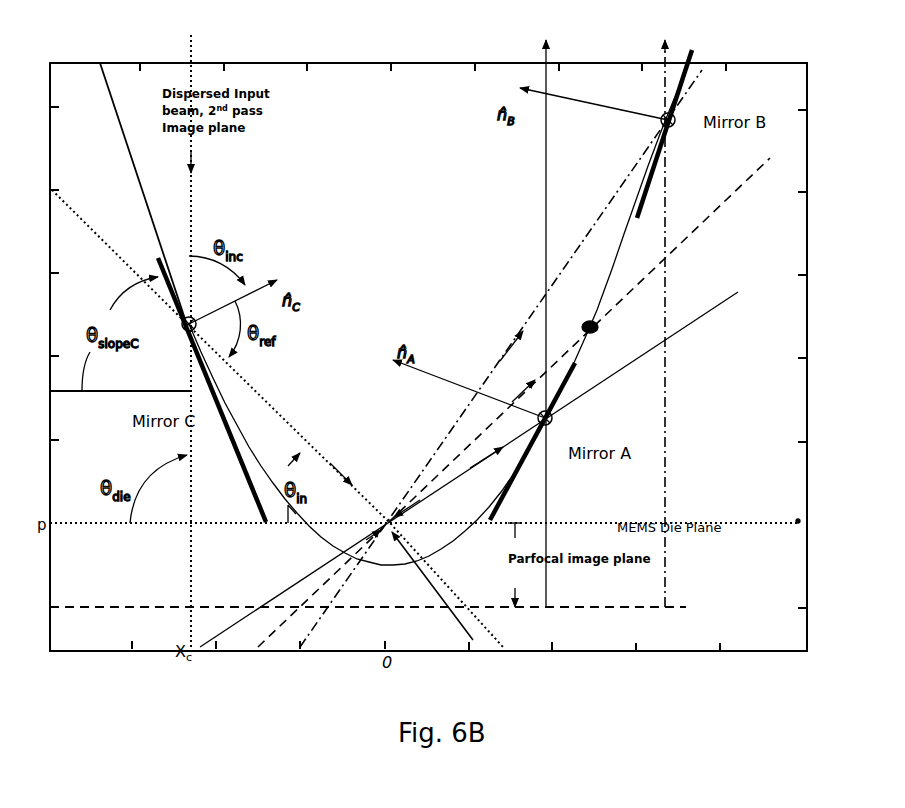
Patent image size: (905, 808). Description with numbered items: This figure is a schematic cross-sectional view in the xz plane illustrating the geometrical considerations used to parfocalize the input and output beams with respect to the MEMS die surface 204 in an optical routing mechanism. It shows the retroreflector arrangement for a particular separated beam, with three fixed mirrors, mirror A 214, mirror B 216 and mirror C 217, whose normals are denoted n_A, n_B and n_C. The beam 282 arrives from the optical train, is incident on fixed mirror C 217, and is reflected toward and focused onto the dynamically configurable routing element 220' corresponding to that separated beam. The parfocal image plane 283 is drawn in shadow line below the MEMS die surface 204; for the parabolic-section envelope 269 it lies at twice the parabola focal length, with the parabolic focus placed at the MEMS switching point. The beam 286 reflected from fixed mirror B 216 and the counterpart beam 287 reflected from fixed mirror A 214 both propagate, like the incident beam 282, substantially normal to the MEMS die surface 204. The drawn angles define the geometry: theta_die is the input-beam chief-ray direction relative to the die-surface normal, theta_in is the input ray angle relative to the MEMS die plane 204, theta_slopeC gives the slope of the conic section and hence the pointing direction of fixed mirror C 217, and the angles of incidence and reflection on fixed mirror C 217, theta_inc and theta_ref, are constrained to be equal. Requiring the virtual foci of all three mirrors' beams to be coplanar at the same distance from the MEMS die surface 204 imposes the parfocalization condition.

The MEMS die surface 204 is at (744, 522).
The fixed mirror A 214 is at (573, 384).
The fixed mirror B 216 is at (657, 160).
The fixed mirror C 217 is at (245, 480).
The dynamically configurable routing element 220' is at (453, 602).
The parabolic-section envelope 269 is at (108, 86).
The beam 282 is at (195, 186).
The parfocal image plane 283 is at (676, 608).
The beam reflected from fixed mirror B 286 is at (672, 57).
The beam reflected from fixed mirror A 287 is at (553, 60).